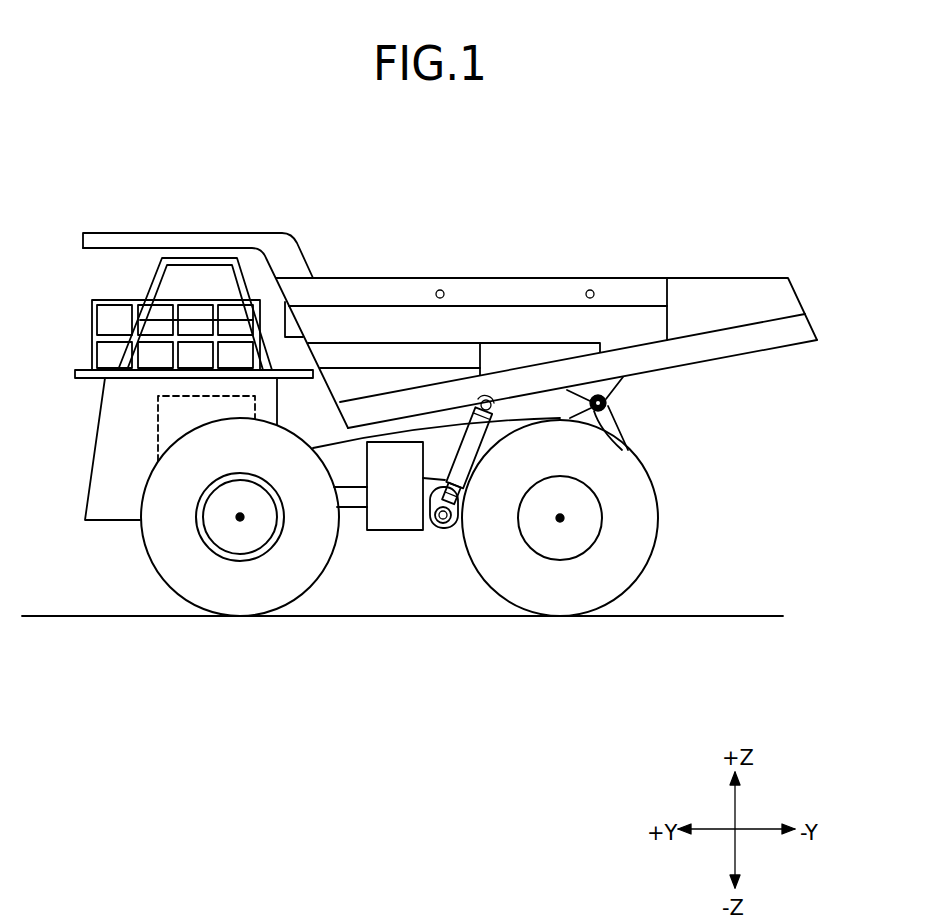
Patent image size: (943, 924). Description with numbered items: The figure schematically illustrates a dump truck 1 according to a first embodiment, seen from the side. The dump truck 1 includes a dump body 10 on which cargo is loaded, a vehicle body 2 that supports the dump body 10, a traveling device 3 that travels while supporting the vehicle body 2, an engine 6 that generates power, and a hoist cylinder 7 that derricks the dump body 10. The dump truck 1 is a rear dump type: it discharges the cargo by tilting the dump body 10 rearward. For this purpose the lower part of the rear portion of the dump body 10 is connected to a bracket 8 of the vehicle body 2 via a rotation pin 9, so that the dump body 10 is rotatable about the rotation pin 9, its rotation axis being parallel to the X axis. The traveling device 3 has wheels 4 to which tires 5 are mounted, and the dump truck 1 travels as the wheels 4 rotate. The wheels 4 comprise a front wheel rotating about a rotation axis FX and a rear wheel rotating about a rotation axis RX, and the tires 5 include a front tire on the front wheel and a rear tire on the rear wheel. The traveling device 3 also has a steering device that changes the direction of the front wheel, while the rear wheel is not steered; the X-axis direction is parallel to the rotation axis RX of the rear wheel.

The dump truck 1 is at (121, 200).
The vehicle body 2 is at (347, 473).
The traveling device 3 is at (667, 563).
The wheel 4 is at (258, 538).
The tire 5 is at (165, 568).
The engine 6 is at (170, 427).
The hoist cylinder 7 is at (433, 524).
The bracket 8 is at (612, 421).
The rotation pin 9 is at (598, 395).
The dump body 10 is at (442, 272).
The rotation axis of the front wheel FX is at (238, 522).
The rotation axis of the rear wheel RX is at (558, 522).